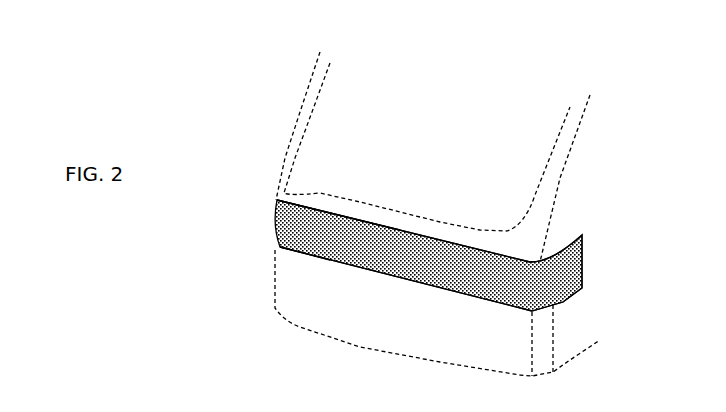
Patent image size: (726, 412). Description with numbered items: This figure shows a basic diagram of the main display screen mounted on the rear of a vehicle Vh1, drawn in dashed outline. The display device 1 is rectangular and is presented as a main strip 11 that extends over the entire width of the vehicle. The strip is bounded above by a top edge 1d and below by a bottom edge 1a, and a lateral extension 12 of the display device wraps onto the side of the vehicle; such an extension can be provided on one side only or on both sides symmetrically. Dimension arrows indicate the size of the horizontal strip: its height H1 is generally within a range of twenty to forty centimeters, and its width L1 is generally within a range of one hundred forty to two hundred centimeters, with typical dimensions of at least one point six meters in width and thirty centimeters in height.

The vehicle Vh1 is at (260, 112).
The display device 1 is at (412, 229).
The main strip 11 is at (373, 240).
The top edge 1d is at (317, 213).
The bottom edge 1a is at (319, 256).
The lateral extension 12 is at (572, 273).
The height H1 is at (467, 250).
The width L1 is at (525, 326).